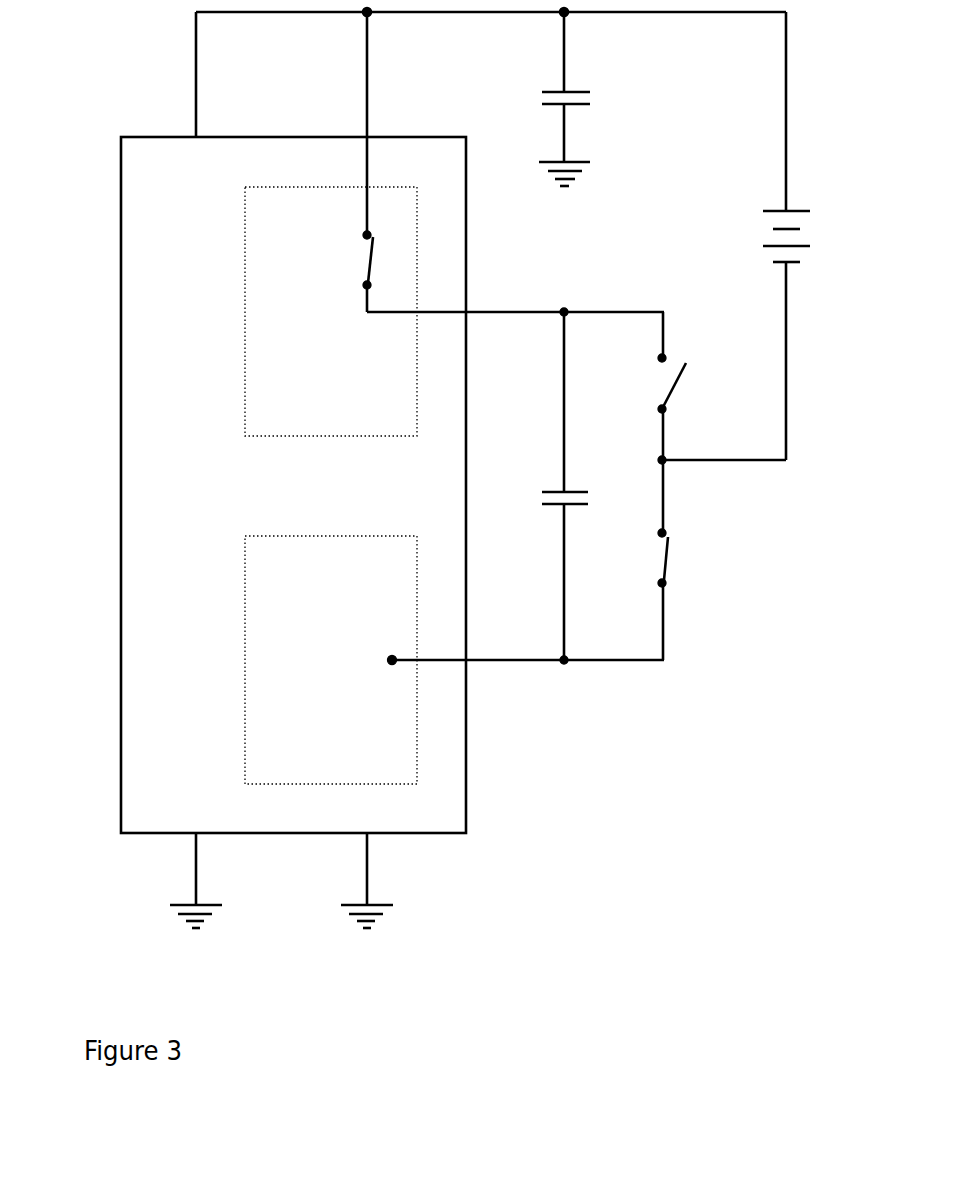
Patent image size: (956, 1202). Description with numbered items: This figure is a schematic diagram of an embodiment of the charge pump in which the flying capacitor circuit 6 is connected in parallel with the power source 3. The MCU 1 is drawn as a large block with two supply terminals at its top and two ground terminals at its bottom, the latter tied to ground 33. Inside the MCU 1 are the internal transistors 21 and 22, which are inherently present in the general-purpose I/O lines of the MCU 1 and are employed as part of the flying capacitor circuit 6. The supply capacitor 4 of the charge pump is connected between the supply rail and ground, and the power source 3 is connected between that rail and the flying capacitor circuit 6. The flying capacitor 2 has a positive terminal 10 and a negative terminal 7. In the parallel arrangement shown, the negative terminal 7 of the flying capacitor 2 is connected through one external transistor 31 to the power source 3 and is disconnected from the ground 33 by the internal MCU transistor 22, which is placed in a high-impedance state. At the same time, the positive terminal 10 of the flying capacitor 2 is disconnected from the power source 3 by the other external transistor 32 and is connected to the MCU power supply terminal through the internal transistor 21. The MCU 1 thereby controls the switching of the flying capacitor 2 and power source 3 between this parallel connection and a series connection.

The MCU 1 is at (121, 284).
The flying capacitor 2 is at (553, 489).
The power source 3 is at (765, 228).
The supply capacitor 4 is at (577, 108).
The flying capacitor circuit 6 is at (673, 675).
The negative terminal of the flying capacitor 7 is at (607, 667).
The positive terminal of the flying capacitor 10 is at (534, 308).
The internal transistor 21 is at (355, 260).
The internal transistor 22 is at (293, 648).
The external transistor 31 is at (676, 560).
The external transistor 32 is at (680, 387).
The ground 33 is at (220, 921).